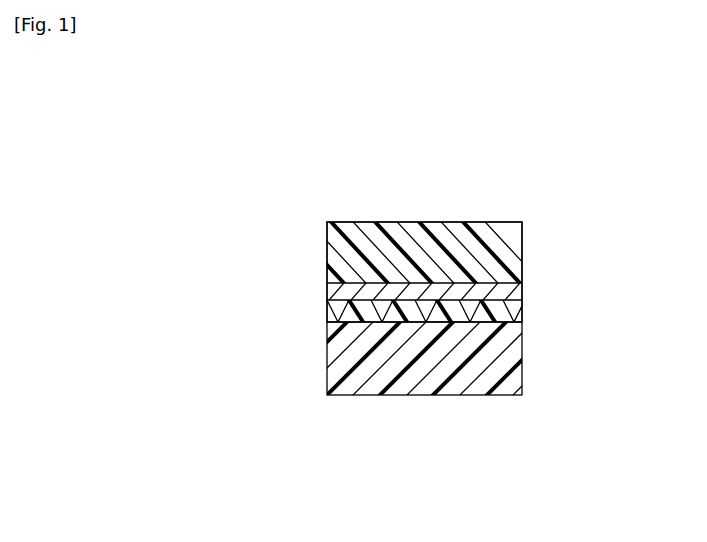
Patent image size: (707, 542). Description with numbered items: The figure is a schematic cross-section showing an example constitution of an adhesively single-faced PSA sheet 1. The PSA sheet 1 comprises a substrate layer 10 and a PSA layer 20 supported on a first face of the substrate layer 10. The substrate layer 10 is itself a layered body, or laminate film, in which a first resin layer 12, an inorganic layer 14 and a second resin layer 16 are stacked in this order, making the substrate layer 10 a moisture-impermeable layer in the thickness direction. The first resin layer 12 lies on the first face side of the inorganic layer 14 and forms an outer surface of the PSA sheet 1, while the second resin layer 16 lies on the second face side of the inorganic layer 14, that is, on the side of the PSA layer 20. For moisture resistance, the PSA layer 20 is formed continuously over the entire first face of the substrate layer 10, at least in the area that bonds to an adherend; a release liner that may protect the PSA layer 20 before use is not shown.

The PSA sheet 1 is at (535, 171).
The substrate layer 10 is at (463, 272).
The first resin layer 12 is at (522, 255).
The inorganic layer 14 is at (522, 287).
The second resin layer 16 is at (449, 315).
The PSA layer 20 is at (522, 365).